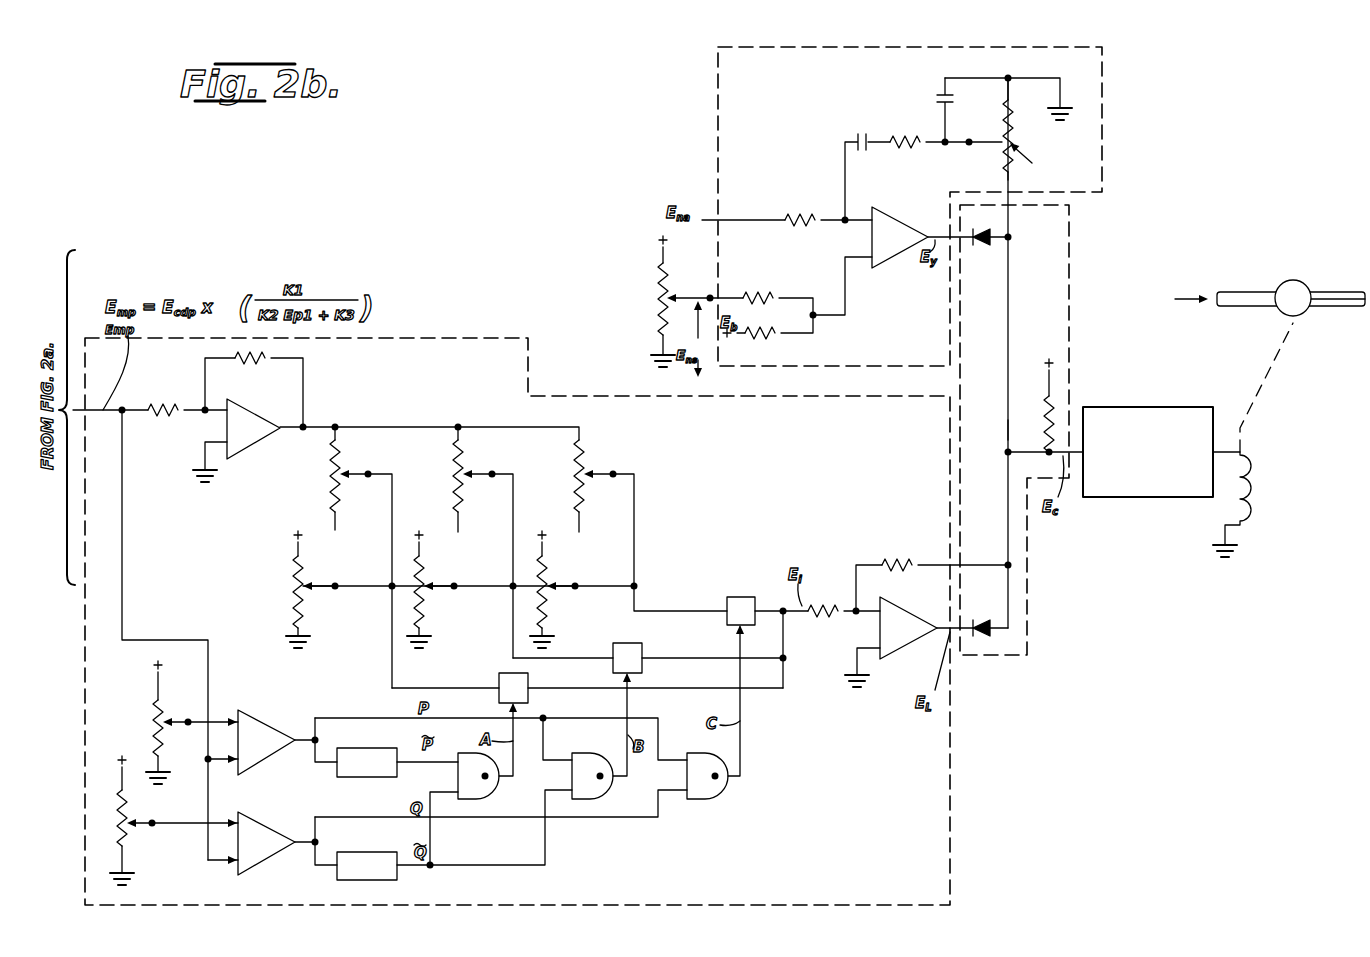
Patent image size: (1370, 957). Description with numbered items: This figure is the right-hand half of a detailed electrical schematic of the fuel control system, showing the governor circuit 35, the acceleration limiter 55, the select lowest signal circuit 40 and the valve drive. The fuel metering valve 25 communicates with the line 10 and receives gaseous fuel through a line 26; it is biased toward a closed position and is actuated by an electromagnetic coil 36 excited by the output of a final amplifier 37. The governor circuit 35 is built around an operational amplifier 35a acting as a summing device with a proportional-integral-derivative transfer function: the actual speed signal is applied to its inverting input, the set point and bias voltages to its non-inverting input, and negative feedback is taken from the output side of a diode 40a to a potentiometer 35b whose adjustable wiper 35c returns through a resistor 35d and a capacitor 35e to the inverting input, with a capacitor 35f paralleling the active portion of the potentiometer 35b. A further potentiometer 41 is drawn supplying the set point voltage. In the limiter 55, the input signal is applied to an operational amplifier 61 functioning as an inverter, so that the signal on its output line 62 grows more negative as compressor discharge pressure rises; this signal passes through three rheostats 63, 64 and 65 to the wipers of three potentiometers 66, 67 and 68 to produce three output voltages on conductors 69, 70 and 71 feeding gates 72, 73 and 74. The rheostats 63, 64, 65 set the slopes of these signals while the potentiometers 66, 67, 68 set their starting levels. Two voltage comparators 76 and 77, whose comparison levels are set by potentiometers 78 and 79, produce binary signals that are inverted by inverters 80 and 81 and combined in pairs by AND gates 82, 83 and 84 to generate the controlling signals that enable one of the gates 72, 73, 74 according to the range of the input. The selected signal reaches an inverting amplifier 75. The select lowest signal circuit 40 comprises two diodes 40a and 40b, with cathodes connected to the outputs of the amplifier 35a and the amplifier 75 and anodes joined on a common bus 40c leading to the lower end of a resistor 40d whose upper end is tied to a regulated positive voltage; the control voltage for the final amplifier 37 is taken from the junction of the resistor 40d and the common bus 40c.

The line 10 is at (1345, 292).
The fuel metering valve 25 is at (1295, 280).
The line 26 is at (1232, 306).
The governor circuit 35 is at (1108, 49).
The operational amplifier 35a is at (918, 231).
The potentiometer 35b is at (1037, 129).
The adjustable wiper 35c is at (970, 146).
The resistor 35d is at (905, 133).
The capacitor 35e is at (862, 130).
The capacitor 35f is at (941, 93).
The electromagnetic coil 36 is at (1251, 482).
The final amplifier 37 is at (1183, 407).
The select lowest signal circuit 40 is at (1078, 246).
The diode 40a is at (990, 243).
The diode 40b is at (982, 620).
The common bus 40c is at (1008, 427).
The resistor 40d is at (1050, 405).
The potentiometer 41 is at (660, 294).
The limiter 55 is at (528, 338).
The operational amplifier 61 is at (243, 452).
The output line 62 is at (335, 424).
The rheostat 63 is at (333, 477).
The rheostat 64 is at (455, 473).
The rheostat 65 is at (576, 468).
The potentiometer 66 is at (290, 583).
The potentiometer 67 is at (425, 579).
The potentiometer 68 is at (548, 578).
The conductor 69 is at (392, 663).
The conductor 70 is at (513, 645).
The conductor 71 is at (676, 606).
The gate 72 is at (499, 682).
The gate 73 is at (625, 643).
The gate 74 is at (745, 597).
The inverting amplifier 75 is at (894, 652).
The voltage comparator 76 is at (246, 713).
The voltage comparator 77 is at (264, 819).
The potentiometer 78 is at (155, 706).
The potentiometer 79 is at (128, 846).
The inverter 80 is at (360, 748).
The inverter 81 is at (370, 852).
The AND gate 82 is at (488, 795).
The AND gate 83 is at (600, 753).
The AND gate 84 is at (704, 800).